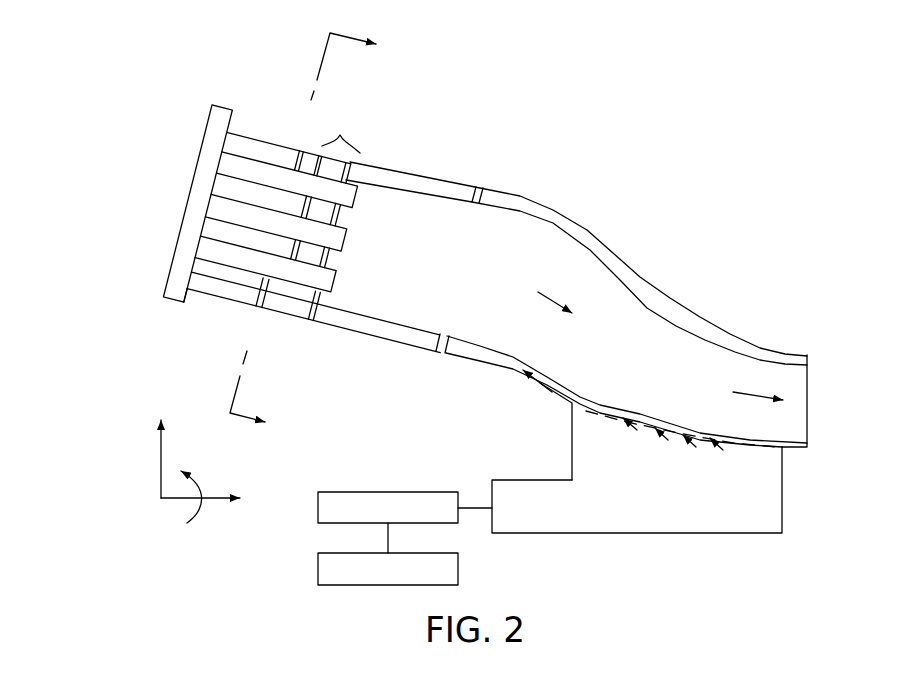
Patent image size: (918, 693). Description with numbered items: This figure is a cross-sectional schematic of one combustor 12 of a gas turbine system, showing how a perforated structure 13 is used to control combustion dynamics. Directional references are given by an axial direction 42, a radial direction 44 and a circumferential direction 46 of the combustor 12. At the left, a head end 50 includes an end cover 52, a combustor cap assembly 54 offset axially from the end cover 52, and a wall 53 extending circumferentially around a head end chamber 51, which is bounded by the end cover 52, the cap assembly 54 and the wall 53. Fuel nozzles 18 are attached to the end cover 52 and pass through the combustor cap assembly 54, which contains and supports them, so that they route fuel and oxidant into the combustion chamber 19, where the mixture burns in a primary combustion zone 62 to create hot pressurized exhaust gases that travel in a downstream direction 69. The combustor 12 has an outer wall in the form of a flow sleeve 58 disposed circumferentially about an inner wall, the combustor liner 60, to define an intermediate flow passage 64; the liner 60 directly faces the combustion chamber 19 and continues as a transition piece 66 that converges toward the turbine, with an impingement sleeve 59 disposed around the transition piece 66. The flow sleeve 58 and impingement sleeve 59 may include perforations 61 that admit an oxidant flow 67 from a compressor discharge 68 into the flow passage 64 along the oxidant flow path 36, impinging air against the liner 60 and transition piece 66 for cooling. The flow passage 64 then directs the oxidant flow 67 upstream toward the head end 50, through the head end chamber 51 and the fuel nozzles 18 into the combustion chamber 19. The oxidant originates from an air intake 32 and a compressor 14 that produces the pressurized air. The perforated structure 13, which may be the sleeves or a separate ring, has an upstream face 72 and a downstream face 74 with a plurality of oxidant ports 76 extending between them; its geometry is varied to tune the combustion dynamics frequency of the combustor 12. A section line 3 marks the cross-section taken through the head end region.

The section line 3- 3 is at (310, 238).
The combustor 12 is at (680, 180).
The perforated structure 13 is at (302, 142).
The compressor 14 is at (318, 509).
The fuel nozzles 18 is at (262, 227).
The combustion chamber 19 is at (420, 216).
The air intake 32 is at (318, 572).
The oxidant flow path 36 is at (313, 158).
The axial direction 42 is at (180, 502).
The radial direction 44 is at (158, 462).
The circumferential direction 46 is at (198, 478).
The head end 50 is at (137, 244).
The head end chamber 51 is at (197, 282).
The end cover 52 is at (204, 140).
The wall 53 is at (262, 270).
The combustor cap assembly 54 is at (341, 132).
The flow sleeve 58 is at (550, 210).
The impingement sleeve 59 is at (647, 278).
The combustor liner 60 is at (492, 205).
The perforations 61 is at (749, 447).
The primary combustion zone 62 is at (440, 274).
The flow passage 64 is at (585, 236).
The transition piece 66 is at (645, 310).
The oxidant flow 67 is at (548, 392).
The compressor discharge 68 is at (645, 534).
The downstream direction 69 is at (554, 296).
The upstream face 72 is at (276, 290).
The downstream face 74 is at (248, 286).
The oxidant ports 76 is at (262, 302).